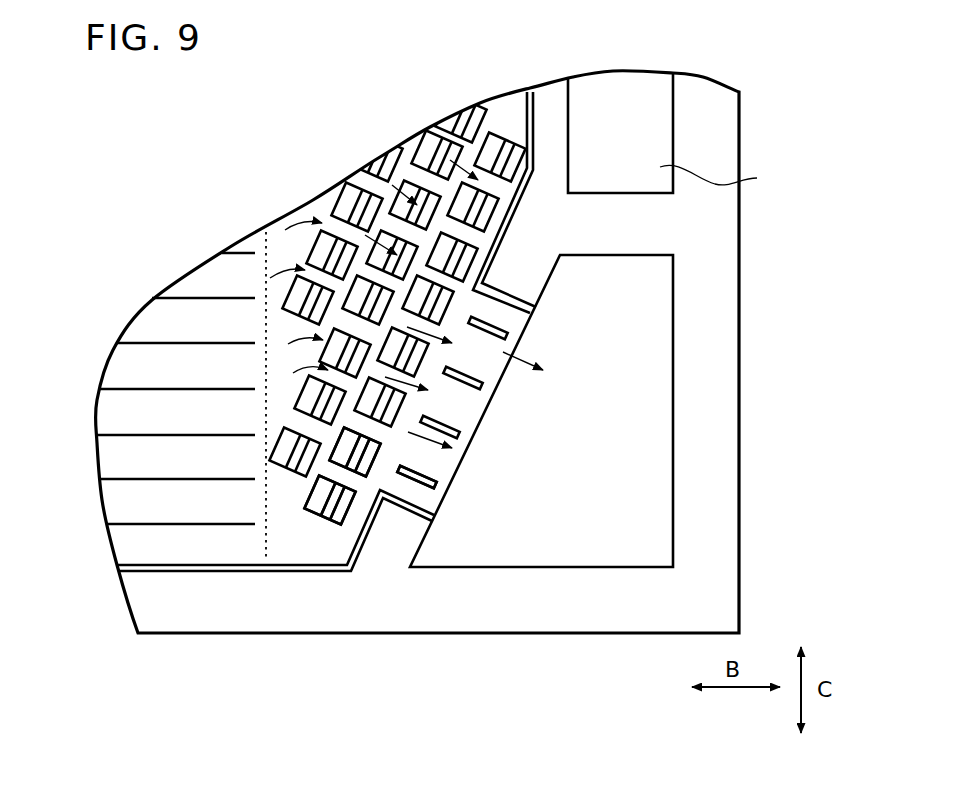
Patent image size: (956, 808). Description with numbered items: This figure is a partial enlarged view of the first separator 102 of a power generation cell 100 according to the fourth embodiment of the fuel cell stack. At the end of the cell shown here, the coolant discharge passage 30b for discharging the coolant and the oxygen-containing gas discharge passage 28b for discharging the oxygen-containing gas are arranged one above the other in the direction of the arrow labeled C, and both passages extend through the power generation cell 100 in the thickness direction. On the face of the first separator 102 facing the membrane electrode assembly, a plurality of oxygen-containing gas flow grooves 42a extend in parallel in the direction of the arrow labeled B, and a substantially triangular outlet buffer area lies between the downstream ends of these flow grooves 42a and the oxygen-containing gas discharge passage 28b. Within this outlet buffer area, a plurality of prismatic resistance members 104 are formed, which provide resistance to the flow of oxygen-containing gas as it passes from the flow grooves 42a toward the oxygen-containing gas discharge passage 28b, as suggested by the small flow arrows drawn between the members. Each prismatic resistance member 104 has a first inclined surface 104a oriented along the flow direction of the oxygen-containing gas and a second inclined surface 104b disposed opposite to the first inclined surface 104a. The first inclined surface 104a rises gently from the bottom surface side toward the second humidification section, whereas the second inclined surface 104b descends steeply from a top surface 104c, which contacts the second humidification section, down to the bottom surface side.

The power generation cell 100 is at (287, 81).
The first separator 102 is at (311, 635).
The prismatic resistance members 104 is at (330, 226).
The first inclined surface 104a is at (338, 458).
The second inclined surface 104b is at (367, 452).
The top surface 104c is at (372, 440).
The oxygen-containing gas discharge passage 28b is at (541, 411).
The coolant discharge passage 30b is at (620, 133).
The oxygen-containing gas flow grooves 42a is at (124, 458).